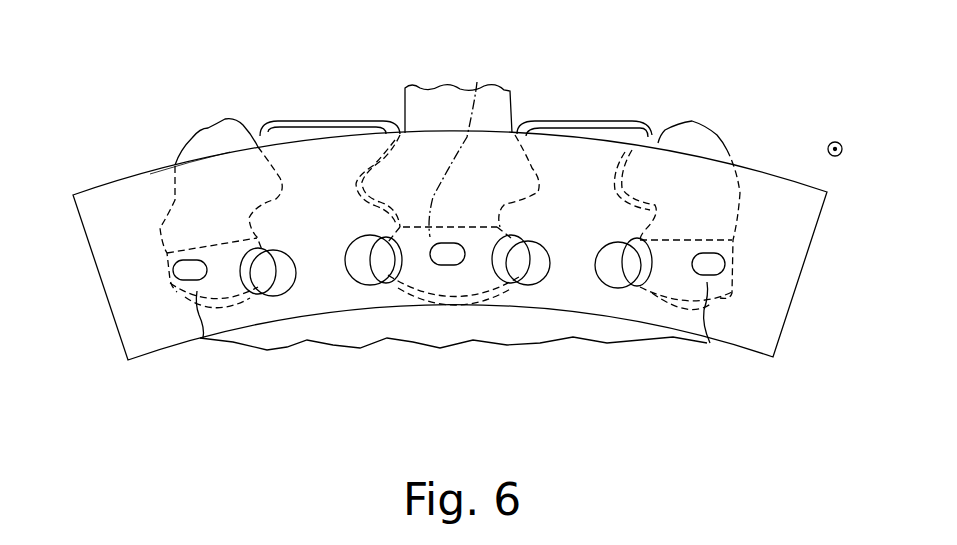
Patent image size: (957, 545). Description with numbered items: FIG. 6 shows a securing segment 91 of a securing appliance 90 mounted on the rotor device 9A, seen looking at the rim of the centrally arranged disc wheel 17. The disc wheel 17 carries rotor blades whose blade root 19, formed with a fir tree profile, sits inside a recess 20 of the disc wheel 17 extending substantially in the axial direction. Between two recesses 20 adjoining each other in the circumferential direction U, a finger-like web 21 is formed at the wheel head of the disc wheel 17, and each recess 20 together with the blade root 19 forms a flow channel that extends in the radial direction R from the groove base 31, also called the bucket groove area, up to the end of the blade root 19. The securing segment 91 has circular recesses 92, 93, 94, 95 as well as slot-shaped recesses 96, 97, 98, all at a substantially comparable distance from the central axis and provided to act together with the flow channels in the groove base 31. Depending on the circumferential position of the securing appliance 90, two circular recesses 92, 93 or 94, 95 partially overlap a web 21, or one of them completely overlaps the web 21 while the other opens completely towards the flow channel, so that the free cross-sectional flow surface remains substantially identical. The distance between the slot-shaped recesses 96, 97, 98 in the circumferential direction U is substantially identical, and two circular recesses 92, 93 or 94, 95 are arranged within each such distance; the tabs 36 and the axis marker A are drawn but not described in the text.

The rotor device 9A is at (80, 138).
The disc wheel 17 is at (287, 360).
The blade root 19 is at (233, 135).
The recess 20 is at (460, 146).
The finger-like web 21 is at (350, 127).
The groove base 31 is at (458, 288).
The retaining tab 36 is at (278, 122).
The securing appliance 90 is at (190, 145).
The securing segment 91 is at (138, 198).
The circular recess 92 is at (245, 286).
The circular recess 93 is at (362, 283).
The circular recess 94 is at (537, 281).
The circular recess 95 is at (620, 288).
The slot-shaped recess 96 is at (178, 280).
The slot-shaped recess 97 is at (437, 268).
The slot-shaped recess 98 is at (708, 277).
The radial direction R is at (290, 108).
The circumferential direction U is at (695, 140).
The axis A is at (840, 147).